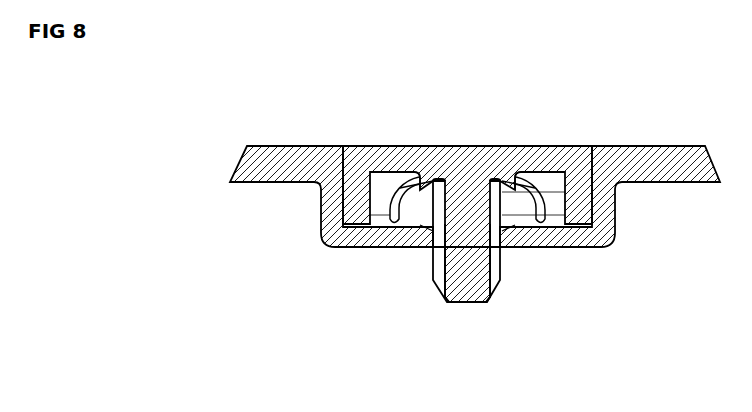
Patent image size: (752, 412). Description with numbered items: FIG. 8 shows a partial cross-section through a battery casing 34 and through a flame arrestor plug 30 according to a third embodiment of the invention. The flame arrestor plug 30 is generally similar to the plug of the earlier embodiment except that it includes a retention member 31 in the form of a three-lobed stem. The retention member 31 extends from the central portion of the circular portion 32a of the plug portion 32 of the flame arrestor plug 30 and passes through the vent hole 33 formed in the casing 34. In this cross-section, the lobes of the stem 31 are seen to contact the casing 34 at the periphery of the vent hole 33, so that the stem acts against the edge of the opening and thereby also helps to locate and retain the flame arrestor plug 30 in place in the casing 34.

The flame arrestor plug 30 is at (411, 152).
The retention member 31 is at (470, 278).
The plug portion 32 is at (362, 170).
The circular portion 32a is at (508, 152).
The vent hole 33 is at (432, 250).
The casing 34 is at (605, 247).